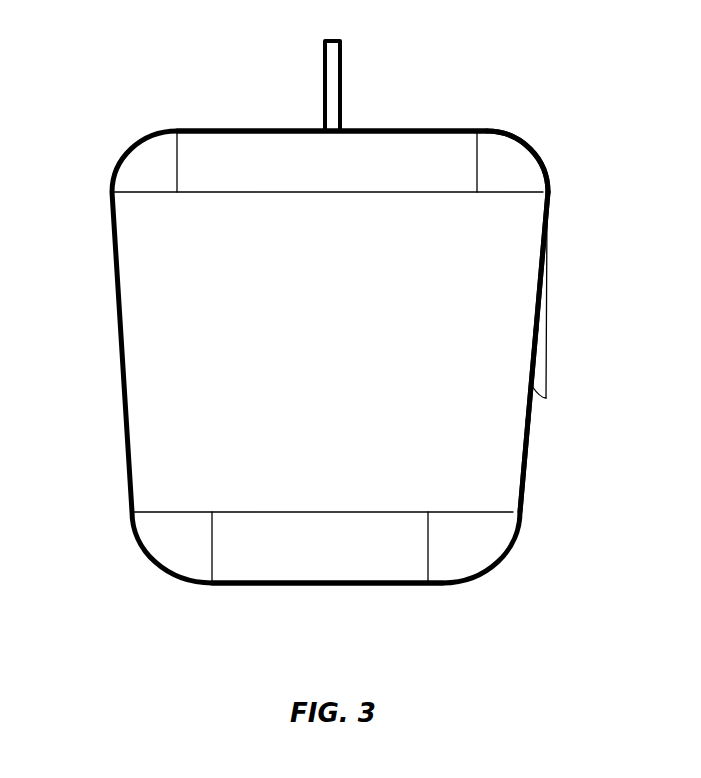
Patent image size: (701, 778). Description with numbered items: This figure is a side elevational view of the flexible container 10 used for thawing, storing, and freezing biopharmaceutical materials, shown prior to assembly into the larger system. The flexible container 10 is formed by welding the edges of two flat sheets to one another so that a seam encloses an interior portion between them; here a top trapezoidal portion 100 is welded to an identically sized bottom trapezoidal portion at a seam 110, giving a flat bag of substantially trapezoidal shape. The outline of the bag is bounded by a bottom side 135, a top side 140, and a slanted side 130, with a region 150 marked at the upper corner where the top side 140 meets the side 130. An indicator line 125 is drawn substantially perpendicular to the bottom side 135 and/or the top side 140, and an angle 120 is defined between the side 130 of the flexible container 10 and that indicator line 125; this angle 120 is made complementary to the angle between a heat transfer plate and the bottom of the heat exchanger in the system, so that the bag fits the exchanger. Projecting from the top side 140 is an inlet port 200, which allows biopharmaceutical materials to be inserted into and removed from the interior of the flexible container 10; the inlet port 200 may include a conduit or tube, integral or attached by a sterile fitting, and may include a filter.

The flexible container 10 is at (122, 388).
The top trapezoidal portion 100 is at (305, 416).
The seam 110 is at (520, 492).
The angle 120 is at (536, 390).
The indicator line 125 is at (547, 288).
The side 130 is at (538, 340).
The bottom side 135 is at (410, 586).
The top side 140 is at (432, 126).
The corner 150 is at (550, 192).
The inlet port 200 is at (343, 88).